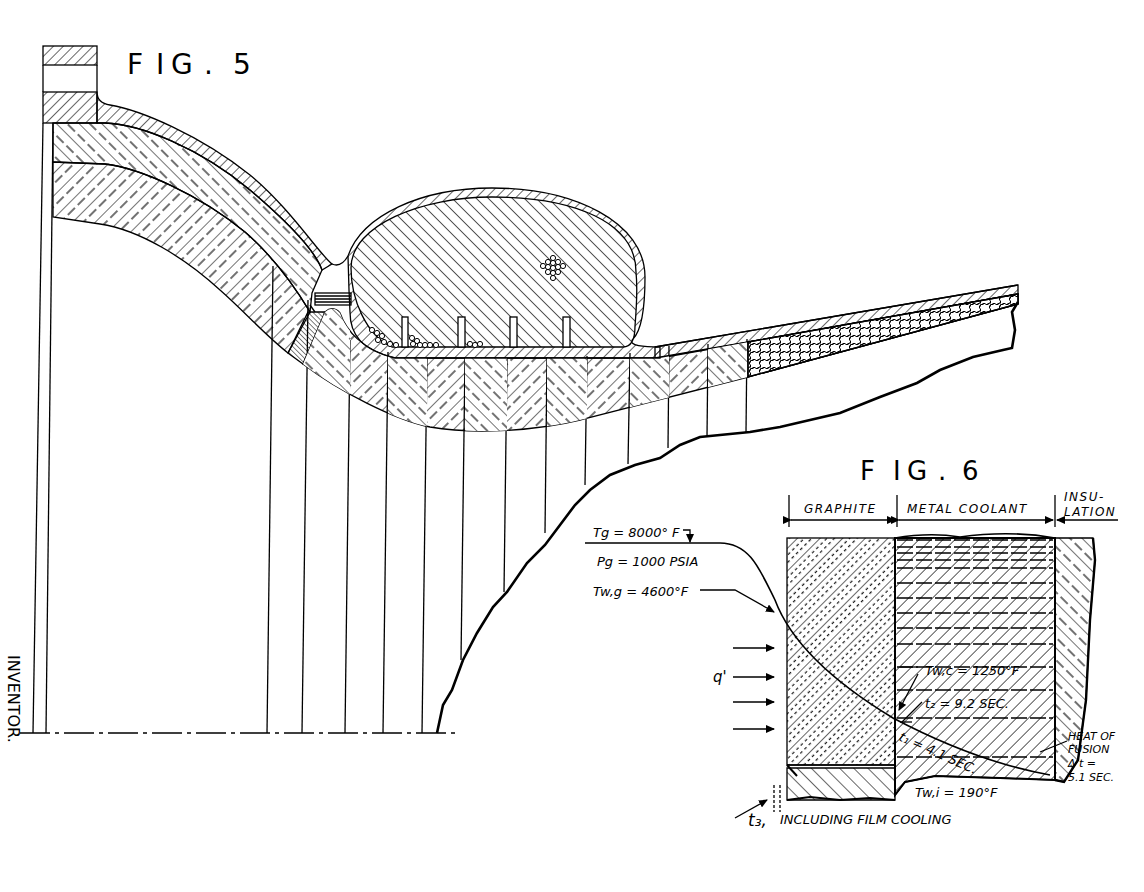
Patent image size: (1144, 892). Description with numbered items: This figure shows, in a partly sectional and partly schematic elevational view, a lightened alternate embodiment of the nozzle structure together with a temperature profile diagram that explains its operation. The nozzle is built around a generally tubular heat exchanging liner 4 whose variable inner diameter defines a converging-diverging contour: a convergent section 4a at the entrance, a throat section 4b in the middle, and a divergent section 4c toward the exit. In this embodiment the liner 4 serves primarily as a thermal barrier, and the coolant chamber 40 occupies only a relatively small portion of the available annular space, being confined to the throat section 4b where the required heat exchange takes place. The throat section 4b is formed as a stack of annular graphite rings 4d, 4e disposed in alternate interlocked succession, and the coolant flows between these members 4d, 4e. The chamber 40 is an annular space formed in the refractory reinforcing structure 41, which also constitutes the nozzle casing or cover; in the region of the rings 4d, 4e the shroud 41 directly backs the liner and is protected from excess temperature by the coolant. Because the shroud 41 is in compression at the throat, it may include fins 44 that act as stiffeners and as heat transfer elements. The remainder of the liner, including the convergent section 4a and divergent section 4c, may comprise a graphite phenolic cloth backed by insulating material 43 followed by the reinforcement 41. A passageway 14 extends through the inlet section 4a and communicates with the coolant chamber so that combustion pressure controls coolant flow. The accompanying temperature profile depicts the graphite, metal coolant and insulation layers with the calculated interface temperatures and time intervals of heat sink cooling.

The heat exchanging liner 4 is at (366, 422).
The convergent liner section 4a is at (243, 300).
The throat liner section 4b is at (346, 397).
The divergent liner section 4c is at (807, 360).
The annular graphite ring 4d is at (597, 414).
The annular graphite ring 4e is at (634, 410).
The passageway 14 is at (305, 360).
The coolant chamber 40 is at (503, 266).
The refractory reinforcing structure 41 is at (713, 343).
The insulating material 43 is at (62, 148).
The fins 44 is at (514, 330).